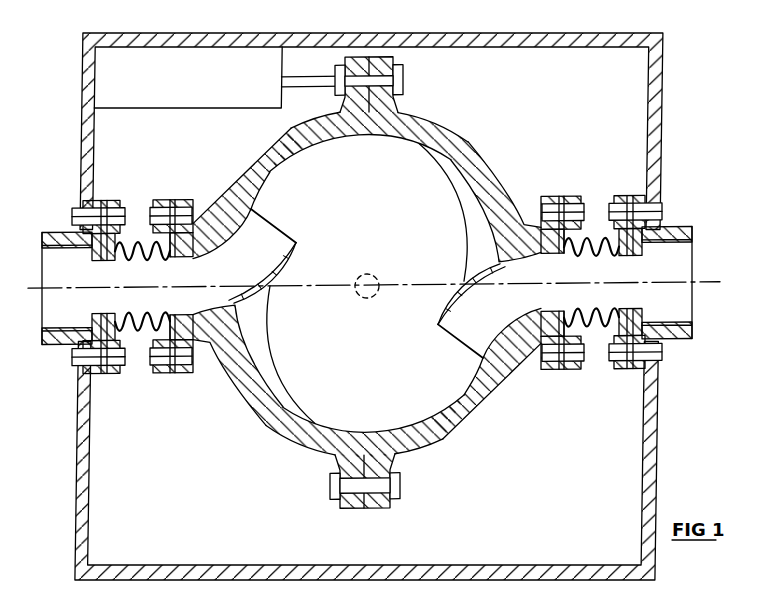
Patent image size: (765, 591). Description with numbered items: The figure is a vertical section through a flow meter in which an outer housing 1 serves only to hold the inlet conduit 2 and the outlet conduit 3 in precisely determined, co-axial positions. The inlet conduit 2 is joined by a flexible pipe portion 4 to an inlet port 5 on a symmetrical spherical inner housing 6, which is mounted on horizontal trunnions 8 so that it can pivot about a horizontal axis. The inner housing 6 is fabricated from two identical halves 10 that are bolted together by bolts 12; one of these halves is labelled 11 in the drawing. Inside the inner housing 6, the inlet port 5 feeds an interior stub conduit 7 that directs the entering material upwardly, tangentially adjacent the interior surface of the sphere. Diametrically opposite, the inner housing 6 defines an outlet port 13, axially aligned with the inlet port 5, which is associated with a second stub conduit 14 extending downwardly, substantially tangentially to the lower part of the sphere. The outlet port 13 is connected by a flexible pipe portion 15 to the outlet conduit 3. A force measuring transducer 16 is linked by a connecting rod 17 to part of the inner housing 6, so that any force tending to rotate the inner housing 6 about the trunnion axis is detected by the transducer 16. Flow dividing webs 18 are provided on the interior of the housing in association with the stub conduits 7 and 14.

The outer housing 1 is at (660, 156).
The inlet conduit 2 is at (53, 346).
The outlet conduit 3 is at (678, 340).
The flexible pipe portion 4 is at (140, 332).
The inlet port 5 is at (173, 306).
The spherical inner housing 6 is at (272, 417).
The interior stub conduit 7 is at (278, 268).
The horizontal trunnions 8 is at (376, 278).
The identical halves 10 is at (296, 127).
The lower part of spherical body 11 is at (462, 416).
The bolts 12 is at (403, 67).
The outlet port 13 is at (538, 334).
The stub conduit 14 is at (434, 311).
The flexible pipe portion 15 is at (590, 325).
The force measuring transducer 16 is at (265, 50).
The connecting rod 17 is at (336, 78).
The flow dividing webs 18 is at (266, 359).